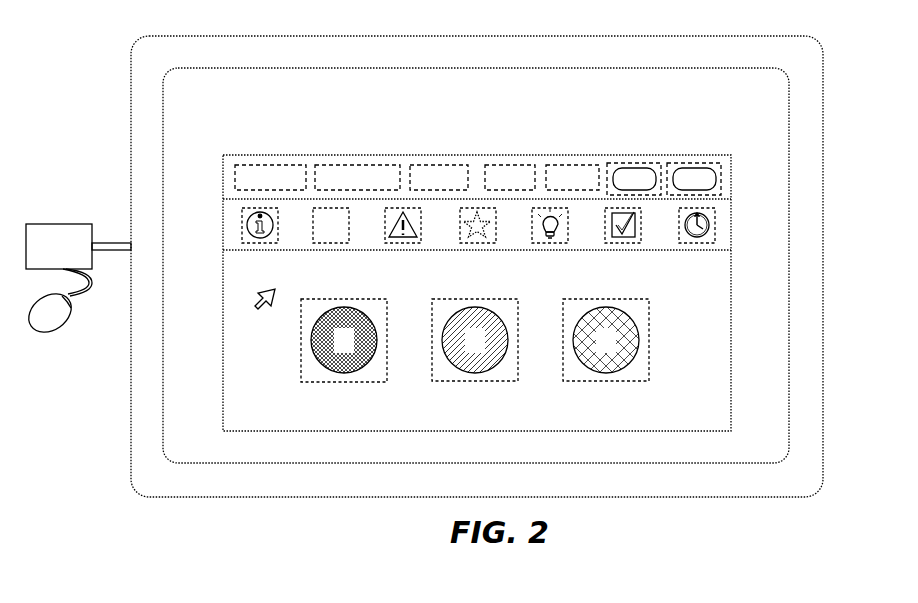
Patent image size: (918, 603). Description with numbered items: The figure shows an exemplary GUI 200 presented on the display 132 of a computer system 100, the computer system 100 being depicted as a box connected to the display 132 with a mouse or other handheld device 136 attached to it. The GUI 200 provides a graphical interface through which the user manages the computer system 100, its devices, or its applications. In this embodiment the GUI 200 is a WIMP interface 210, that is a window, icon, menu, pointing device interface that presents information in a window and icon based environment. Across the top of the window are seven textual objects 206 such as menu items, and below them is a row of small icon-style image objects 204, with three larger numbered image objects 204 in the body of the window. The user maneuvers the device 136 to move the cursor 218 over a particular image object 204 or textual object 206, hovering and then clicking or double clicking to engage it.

The computer system 100 is at (41, 258).
The display 132 is at (238, 37).
The mouse or other handheld device 136 is at (51, 331).
The GUI 200 is at (220, 138).
The image objects 204 is at (242, 226).
The textual objects 206 is at (271, 165).
The WIMP interface 210 is at (268, 101).
The cursor 218 is at (256, 303).